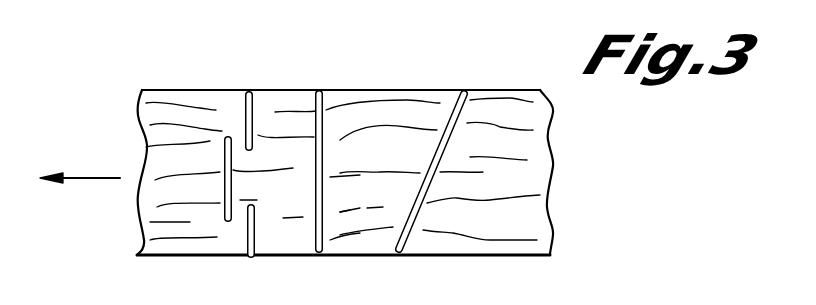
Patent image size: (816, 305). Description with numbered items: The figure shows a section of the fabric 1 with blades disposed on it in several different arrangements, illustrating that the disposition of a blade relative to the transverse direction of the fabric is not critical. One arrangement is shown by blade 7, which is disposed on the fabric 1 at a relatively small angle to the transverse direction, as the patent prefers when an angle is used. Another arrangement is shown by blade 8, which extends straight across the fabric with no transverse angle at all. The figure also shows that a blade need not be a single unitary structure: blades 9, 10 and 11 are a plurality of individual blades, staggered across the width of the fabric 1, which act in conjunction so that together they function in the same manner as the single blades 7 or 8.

The fabric 1 is at (522, 173).
The blade 7 is at (455, 110).
The blade 8 is at (324, 117).
The blade 9 is at (255, 110).
The blade 10 is at (226, 139).
The blade 11 is at (230, 270).